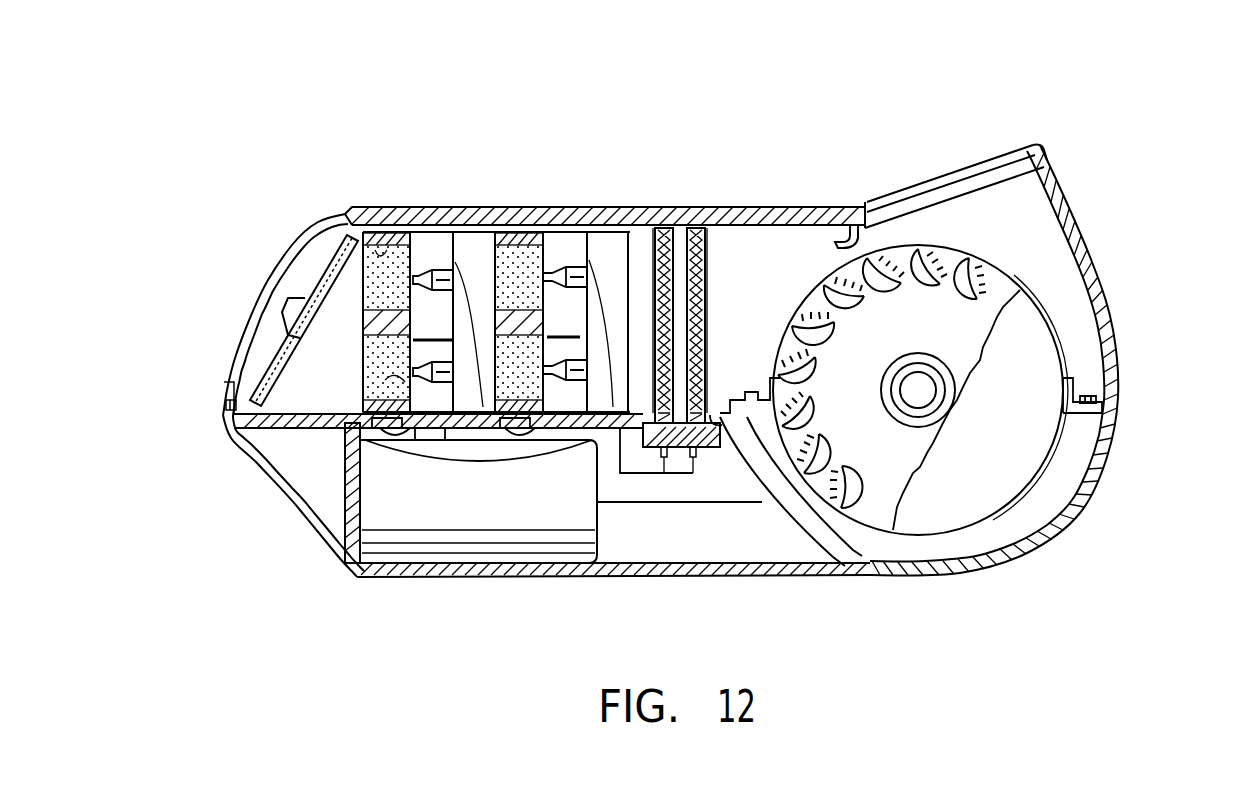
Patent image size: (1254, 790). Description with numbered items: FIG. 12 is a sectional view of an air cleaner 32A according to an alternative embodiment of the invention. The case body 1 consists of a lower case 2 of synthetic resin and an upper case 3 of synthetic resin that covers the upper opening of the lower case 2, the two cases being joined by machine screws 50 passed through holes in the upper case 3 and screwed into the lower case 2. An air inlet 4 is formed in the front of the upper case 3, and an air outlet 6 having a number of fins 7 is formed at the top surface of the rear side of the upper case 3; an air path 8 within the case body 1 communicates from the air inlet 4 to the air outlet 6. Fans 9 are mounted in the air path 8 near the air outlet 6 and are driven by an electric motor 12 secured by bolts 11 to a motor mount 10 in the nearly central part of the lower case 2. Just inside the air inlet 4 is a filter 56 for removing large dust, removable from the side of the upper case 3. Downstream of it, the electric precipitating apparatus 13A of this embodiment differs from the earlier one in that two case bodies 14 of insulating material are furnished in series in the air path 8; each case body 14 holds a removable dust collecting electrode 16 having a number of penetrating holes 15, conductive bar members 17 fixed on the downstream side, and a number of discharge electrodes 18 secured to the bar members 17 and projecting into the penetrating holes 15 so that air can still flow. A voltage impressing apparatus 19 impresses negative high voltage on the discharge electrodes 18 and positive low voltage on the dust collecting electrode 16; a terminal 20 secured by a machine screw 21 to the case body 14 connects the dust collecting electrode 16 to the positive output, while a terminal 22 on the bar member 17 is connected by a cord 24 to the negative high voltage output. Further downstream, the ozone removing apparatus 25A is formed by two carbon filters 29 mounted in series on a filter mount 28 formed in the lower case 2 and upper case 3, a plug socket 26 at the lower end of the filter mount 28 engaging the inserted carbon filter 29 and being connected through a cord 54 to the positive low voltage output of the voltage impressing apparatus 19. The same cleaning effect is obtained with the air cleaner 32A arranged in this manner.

The case body 1 is at (1093, 253).
The lower case 2 is at (283, 490).
The upper case 3 is at (682, 207).
The air inlet 4 is at (277, 283).
The air outlet 6 is at (938, 180).
The fins 7 is at (990, 173).
The air path 8 is at (488, 235).
The fans 9 is at (898, 253).
The motor mount 10 is at (1045, 435).
The bolts 11 is at (1090, 395).
The electric motor 12 is at (995, 500).
The electric precipitating apparatus 13A is at (358, 287).
The case body 14 is at (440, 215).
The penetrating holes 15 is at (383, 240).
The dust collecting electrode 16 is at (365, 340).
The bar members 17 is at (470, 250).
The discharge electrodes 18 is at (405, 235).
The voltage impressing apparatus 19 is at (465, 563).
The terminal 20 is at (396, 440).
The machine screw 21 is at (427, 445).
The terminal 22 is at (603, 320).
The cord 24 is at (558, 462).
The ozone removing apparatus 25A is at (720, 252).
The plug socket 26 is at (712, 420).
The filter mount 28 is at (718, 440).
The carbon filter 29 is at (673, 320).
The air cleaner 32A is at (1105, 133).
The machine screws 50 is at (226, 403).
The cord 54 is at (665, 473).
The filter 56 is at (300, 317).